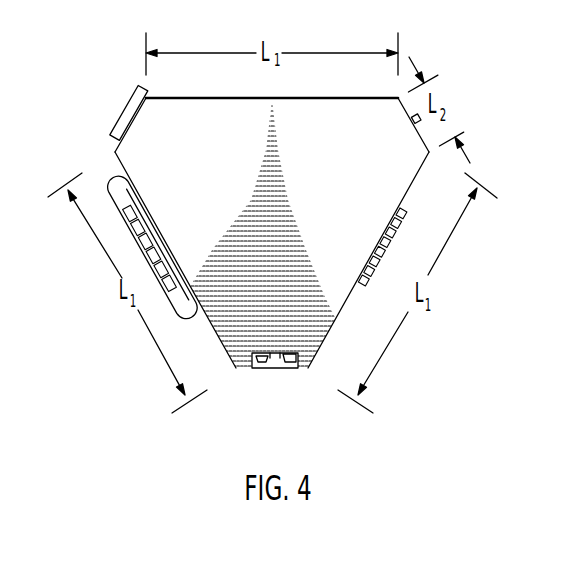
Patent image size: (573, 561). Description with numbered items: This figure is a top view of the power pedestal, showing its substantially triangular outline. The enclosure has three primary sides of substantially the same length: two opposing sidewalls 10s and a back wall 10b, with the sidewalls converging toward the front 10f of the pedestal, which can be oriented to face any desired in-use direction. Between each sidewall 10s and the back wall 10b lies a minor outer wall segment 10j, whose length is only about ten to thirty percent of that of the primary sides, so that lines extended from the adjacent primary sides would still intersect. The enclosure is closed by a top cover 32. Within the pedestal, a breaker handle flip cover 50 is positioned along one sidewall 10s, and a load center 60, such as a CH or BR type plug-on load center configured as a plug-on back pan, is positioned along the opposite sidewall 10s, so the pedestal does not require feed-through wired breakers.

The back wall 10b is at (233, 97).
The sidewalls 10s is at (123, 172).
The front 10f is at (275, 372).
The minor outer wall segment 10j is at (123, 122).
The top cover 32 is at (255, 143).
The breaker handle flip cover 50 is at (155, 275).
The load center 60 is at (385, 252).